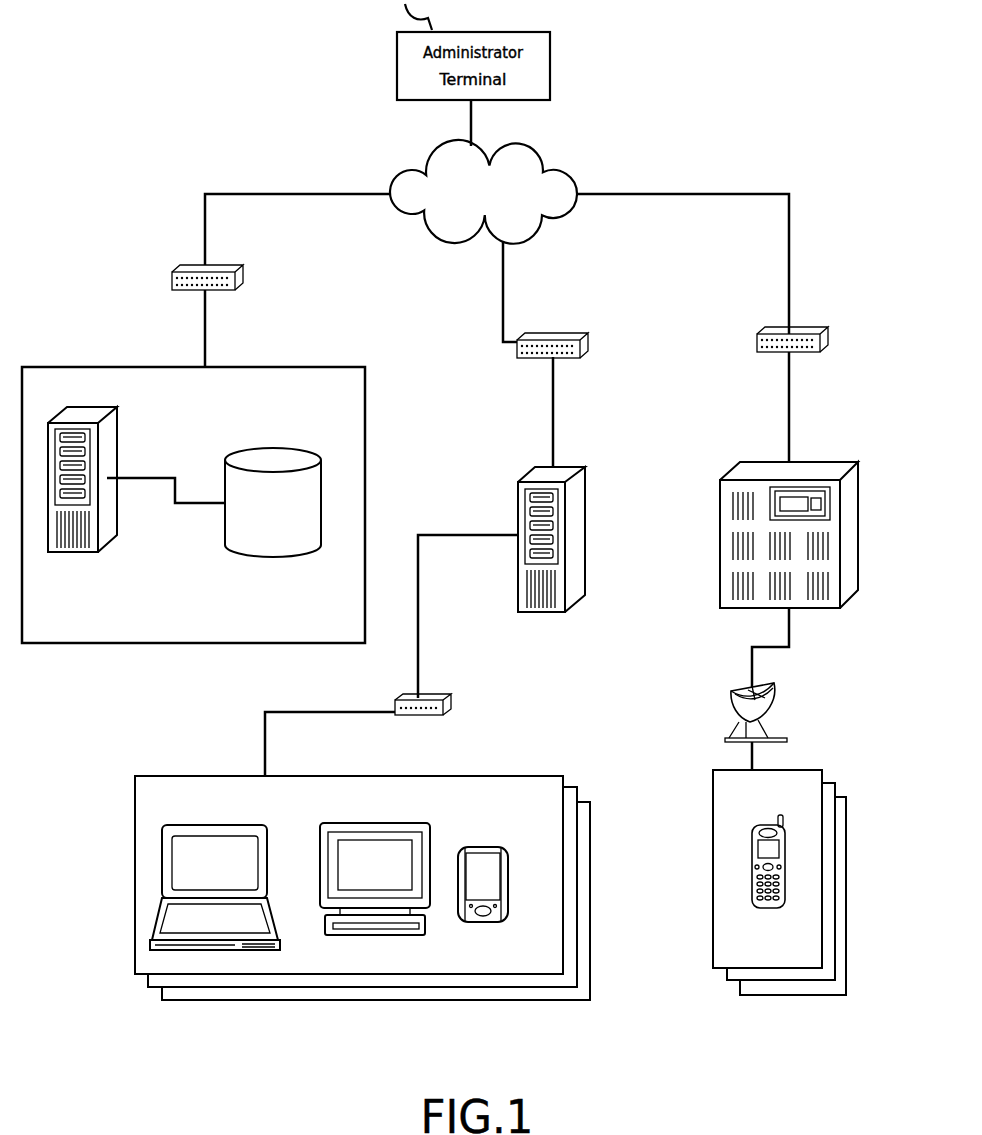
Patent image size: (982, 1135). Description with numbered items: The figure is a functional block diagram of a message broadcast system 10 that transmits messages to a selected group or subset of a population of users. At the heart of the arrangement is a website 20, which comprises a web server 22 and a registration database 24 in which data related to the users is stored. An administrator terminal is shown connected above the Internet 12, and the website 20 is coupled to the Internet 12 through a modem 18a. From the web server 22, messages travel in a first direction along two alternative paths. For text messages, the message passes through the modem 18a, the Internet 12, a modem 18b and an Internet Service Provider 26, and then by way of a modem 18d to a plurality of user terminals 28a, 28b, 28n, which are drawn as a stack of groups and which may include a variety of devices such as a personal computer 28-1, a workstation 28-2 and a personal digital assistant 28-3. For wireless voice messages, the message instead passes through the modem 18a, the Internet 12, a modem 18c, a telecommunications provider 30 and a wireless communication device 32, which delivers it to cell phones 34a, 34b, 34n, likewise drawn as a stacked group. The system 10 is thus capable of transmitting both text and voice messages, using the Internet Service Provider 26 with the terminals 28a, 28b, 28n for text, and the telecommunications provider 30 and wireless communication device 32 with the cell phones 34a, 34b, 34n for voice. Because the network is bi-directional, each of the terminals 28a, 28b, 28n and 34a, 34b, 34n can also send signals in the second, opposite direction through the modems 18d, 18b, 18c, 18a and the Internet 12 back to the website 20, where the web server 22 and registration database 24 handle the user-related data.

The message broadcast system 10 is at (150, 132).
The Internet 12 is at (545, 233).
The modem 18a is at (186, 266).
The modem 18b is at (570, 334).
The modem 18c is at (770, 330).
The modem 18d is at (436, 697).
The website 20 is at (333, 367).
The web server 22 is at (110, 448).
The registration database 24 is at (280, 448).
The Internet Service Provider 26 is at (580, 494).
The user terminal 28a is at (565, 786).
The user terminal 28b is at (578, 822).
The user terminal 28n is at (590, 857).
The personal computer 28-1 is at (262, 820).
The workstation 28-2 is at (425, 820).
The personal digital assistant 28-3 is at (515, 840).
The telecommunications provider 30 is at (722, 558).
The wireless communication device 32 is at (778, 712).
The cell phone 34a is at (720, 964).
The cell phone 34b is at (727, 984).
The cell phone 34n is at (740, 998).